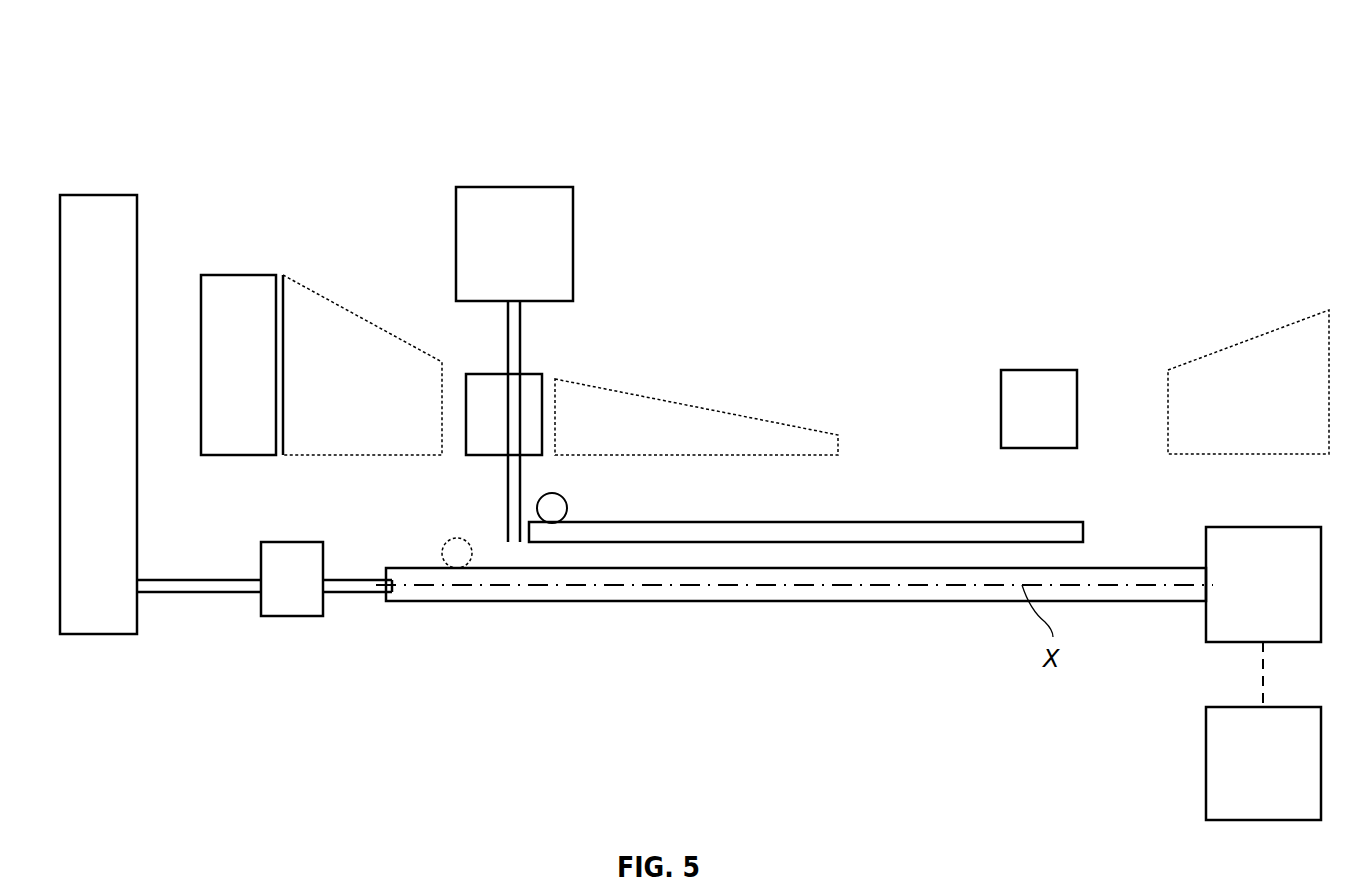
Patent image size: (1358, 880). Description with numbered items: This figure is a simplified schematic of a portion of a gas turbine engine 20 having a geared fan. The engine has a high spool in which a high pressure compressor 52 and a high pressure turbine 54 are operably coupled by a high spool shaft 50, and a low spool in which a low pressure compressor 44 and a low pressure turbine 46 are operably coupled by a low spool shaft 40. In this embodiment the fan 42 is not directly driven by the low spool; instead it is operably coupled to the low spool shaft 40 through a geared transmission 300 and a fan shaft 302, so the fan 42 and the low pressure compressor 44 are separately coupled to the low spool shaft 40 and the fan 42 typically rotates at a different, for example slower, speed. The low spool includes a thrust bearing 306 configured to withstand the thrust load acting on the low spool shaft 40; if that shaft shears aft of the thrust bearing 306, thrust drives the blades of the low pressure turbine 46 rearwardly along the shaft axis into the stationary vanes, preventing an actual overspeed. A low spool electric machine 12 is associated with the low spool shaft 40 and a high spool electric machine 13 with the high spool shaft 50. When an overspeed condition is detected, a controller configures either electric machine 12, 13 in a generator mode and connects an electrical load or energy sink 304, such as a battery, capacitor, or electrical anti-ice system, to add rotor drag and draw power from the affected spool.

The gas turbine engine 20 is at (93, 78).
The fan 42 is at (115, 427).
The low pressure compressor 44 is at (405, 568).
The high spool electric machine 13 is at (531, 257).
The high pressure compressor 52 is at (653, 520).
The thrust bearing 306 is at (451, 538).
The high spool shaft 50 is at (857, 530).
The high pressure turbine 54 is at (1032, 522).
The low pressure turbine 46 is at (1165, 568).
The low spool electric machine 12 is at (1280, 598).
The electrical load or energy sink 304 is at (1287, 777).
The low spool shaft 40 is at (713, 601).
The fan shaft 302 is at (202, 583).
The geared transmission 300 is at (298, 603).